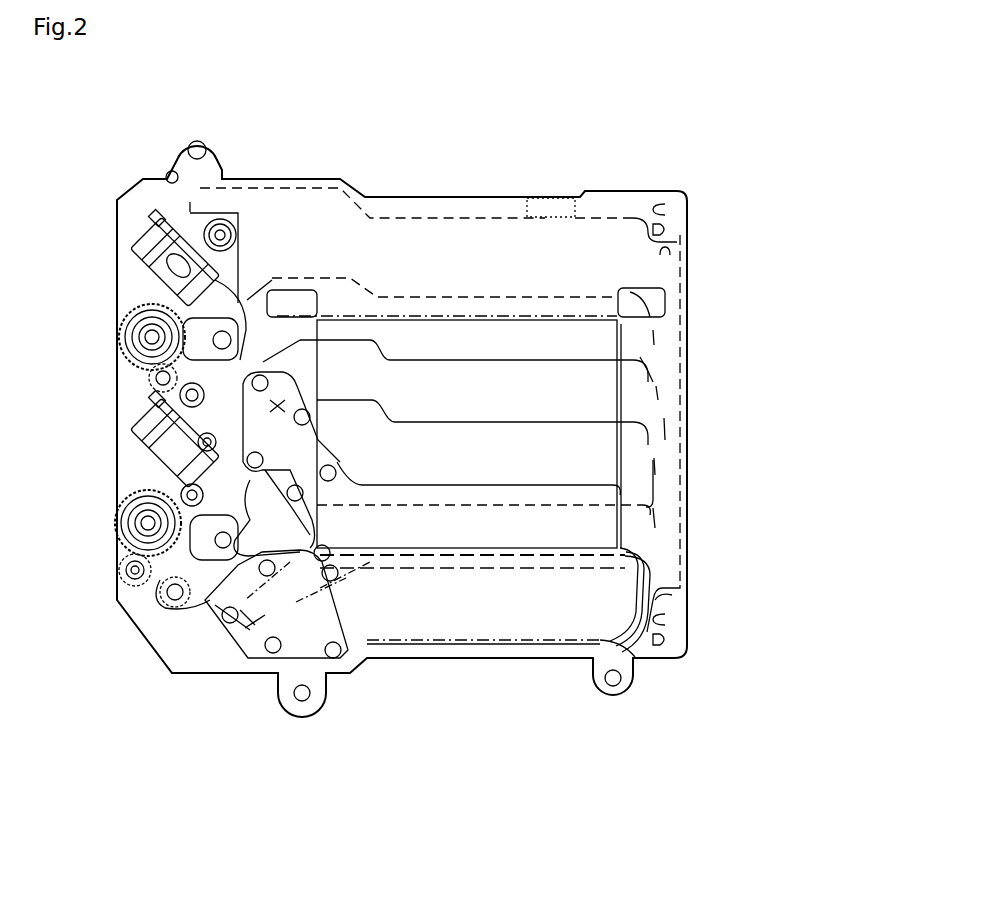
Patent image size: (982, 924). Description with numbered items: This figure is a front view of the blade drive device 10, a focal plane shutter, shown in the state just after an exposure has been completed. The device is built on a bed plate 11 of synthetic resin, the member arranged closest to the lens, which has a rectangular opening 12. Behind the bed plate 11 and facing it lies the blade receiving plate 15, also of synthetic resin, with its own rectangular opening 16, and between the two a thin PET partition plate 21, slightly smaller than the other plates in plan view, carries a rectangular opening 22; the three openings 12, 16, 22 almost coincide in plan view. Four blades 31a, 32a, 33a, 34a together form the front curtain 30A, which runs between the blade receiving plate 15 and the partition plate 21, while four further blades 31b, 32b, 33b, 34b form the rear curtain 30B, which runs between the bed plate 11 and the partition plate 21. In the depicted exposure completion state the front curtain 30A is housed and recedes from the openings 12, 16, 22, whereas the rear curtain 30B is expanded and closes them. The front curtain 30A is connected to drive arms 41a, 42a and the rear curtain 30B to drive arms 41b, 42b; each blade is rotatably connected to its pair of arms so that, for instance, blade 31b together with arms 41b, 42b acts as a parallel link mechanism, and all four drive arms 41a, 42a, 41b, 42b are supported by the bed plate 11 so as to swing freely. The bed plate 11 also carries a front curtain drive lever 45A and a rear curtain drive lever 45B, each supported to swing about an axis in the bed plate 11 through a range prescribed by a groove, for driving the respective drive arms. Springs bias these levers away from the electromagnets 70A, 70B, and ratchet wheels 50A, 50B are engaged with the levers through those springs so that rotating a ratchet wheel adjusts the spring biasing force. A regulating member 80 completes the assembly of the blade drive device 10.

The blade drive device 10 is at (650, 143).
The bed plate 11 is at (688, 625).
The opening 12 is at (476, 343).
The blade receiving plate 15 is at (672, 603).
The opening 16 is at (476, 343).
The partition plate 21 is at (688, 572).
The opening 22 is at (464, 322).
The front curtain 30A is at (522, 701).
The rear curtain 30B is at (750, 305).
The blade 31a is at (522, 701).
The blade 32a is at (522, 701).
The blade 33a is at (522, 701).
The blade 34a is at (678, 738).
The blade 31b is at (648, 520).
The blade 32b is at (653, 467).
The blade 33b is at (683, 380).
The blade 34b is at (655, 342).
The drive arm 41a is at (228, 642).
The drive arm 41b is at (263, 452).
The drive arm 42a is at (207, 615).
The drive arm 42b is at (253, 367).
The front curtain drive lever 45A is at (122, 573).
The rear curtain drive lever 45B is at (125, 385).
The ratchet wheel 50A is at (105, 515).
The ratchet wheel 50B is at (105, 333).
The electromagnet 70A is at (125, 453).
The electromagnet 70B is at (132, 272).
The regulating member 80 is at (555, 193).